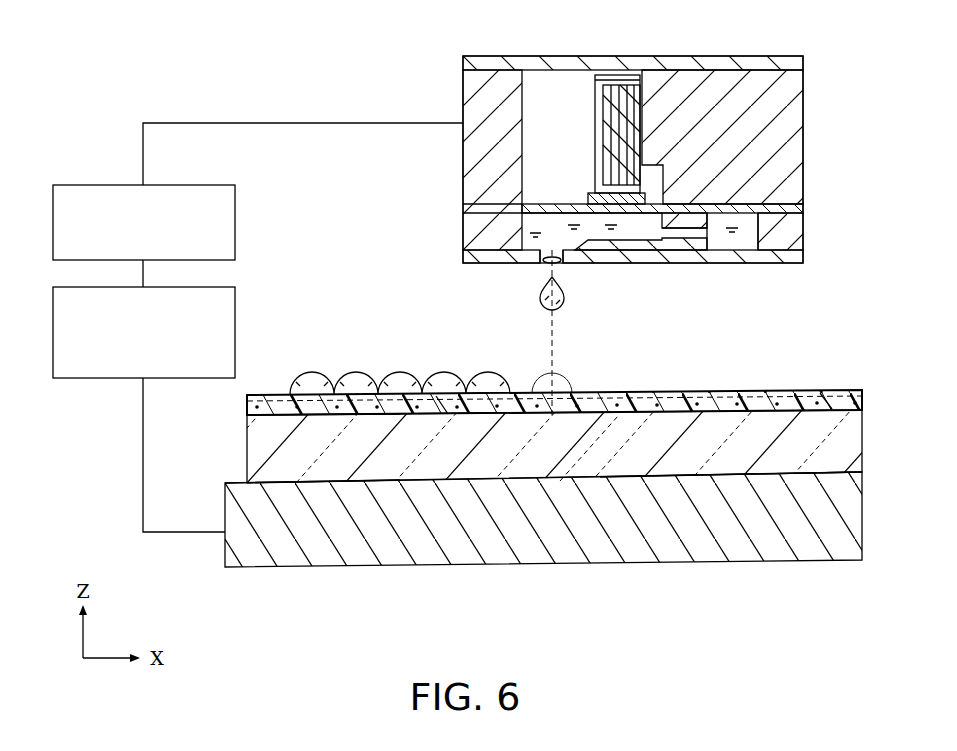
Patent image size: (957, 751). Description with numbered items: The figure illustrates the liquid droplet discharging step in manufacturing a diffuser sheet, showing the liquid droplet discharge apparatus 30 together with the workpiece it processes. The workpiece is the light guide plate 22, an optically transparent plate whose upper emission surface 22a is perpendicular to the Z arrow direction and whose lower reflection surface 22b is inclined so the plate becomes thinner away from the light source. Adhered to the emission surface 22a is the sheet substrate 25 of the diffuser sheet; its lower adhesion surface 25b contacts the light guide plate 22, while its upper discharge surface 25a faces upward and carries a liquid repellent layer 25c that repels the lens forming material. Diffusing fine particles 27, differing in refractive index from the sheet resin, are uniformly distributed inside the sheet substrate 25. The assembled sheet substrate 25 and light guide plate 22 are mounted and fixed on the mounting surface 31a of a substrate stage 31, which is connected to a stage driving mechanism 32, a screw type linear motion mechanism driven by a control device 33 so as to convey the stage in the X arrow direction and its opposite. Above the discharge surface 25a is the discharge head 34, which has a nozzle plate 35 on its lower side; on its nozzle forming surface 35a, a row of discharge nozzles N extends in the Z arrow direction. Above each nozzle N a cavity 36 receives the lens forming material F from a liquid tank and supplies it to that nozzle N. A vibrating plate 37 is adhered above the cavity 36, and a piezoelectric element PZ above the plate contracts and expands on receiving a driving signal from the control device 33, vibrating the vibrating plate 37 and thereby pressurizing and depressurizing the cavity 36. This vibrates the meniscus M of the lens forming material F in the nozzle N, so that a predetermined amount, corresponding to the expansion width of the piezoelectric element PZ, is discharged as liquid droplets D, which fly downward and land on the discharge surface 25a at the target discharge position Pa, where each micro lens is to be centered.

The liquid droplet discharge apparatus 30 is at (131, 112).
The control device 33 is at (101, 185).
The stage driving mechanism 32 is at (101, 379).
The liquid droplet discharge head 34 is at (605, 181).
The nozzle plate 35 is at (777, 262).
The nozzle forming surface 35a is at (693, 262).
The cavity 36 is at (542, 210).
The vibrating plate 37 is at (566, 204).
The piezoelectric element PZ is at (598, 94).
The lens forming material F is at (733, 222).
The liquid droplet D is at (564, 305).
The meniscus M is at (547, 267).
The discharge nozzle N is at (557, 267).
The target discharge position Pa is at (566, 385).
The light guide plate 22 is at (525, 464).
The emission surface 22a is at (258, 410).
The reflection surface 22b is at (683, 483).
The sheet substrate 25 is at (554, 401).
The discharge surface 25a is at (693, 392).
The adhesion surface 25b is at (441, 417).
The liquid repellent layer 25c is at (825, 391).
The diffusing fine particles 27 is at (607, 414).
The substrate stage 31 is at (527, 525).
The mounting surface 31a is at (230, 483).